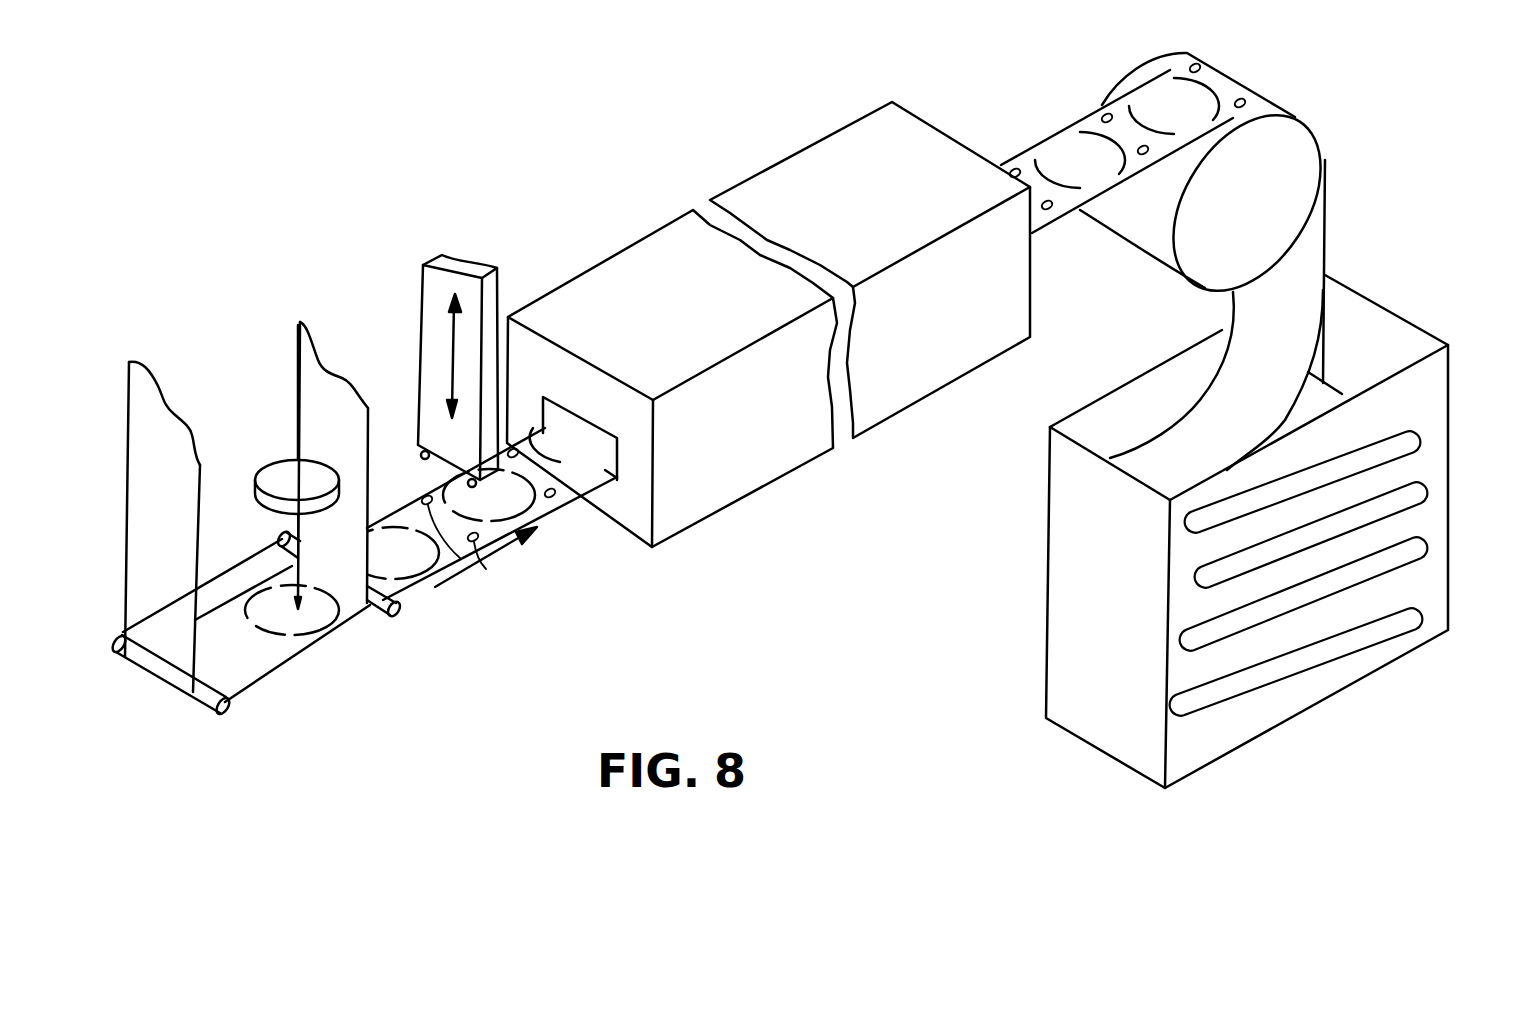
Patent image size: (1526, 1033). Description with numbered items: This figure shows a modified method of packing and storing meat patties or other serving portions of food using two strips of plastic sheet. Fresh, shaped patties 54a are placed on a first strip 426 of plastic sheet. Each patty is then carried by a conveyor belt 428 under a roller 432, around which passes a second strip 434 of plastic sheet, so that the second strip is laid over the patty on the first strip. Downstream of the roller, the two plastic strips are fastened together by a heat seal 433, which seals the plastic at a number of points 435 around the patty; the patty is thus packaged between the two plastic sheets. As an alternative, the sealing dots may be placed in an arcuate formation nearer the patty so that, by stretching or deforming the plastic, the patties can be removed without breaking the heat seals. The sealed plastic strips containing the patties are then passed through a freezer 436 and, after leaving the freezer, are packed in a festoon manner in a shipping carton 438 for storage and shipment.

The strip of plastic sheet 426 is at (151, 370).
The second strip of plastic sheet 434 is at (348, 377).
The shaped patties 54a is at (282, 456).
The heat seal 433 is at (497, 282).
The conveyor belt 428 is at (420, 580).
The roller 432 is at (391, 623).
The sealing points 435 is at (477, 547).
The freezer 436 is at (803, 150).
The shipping carton 438 is at (1448, 377).